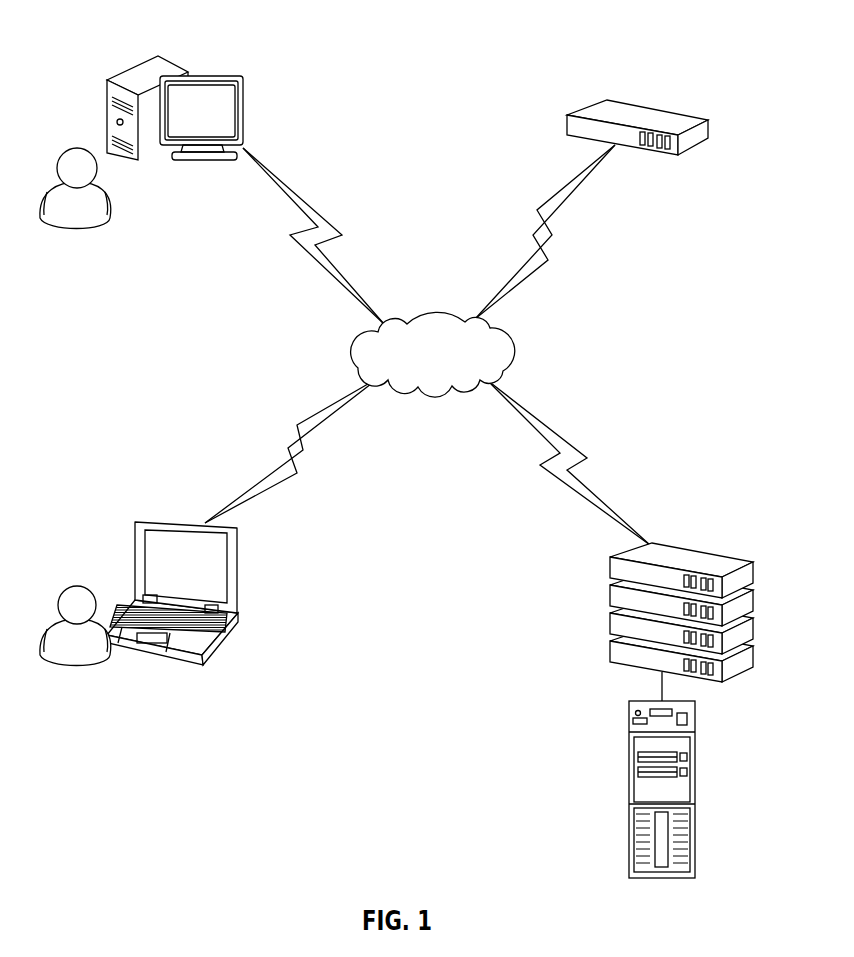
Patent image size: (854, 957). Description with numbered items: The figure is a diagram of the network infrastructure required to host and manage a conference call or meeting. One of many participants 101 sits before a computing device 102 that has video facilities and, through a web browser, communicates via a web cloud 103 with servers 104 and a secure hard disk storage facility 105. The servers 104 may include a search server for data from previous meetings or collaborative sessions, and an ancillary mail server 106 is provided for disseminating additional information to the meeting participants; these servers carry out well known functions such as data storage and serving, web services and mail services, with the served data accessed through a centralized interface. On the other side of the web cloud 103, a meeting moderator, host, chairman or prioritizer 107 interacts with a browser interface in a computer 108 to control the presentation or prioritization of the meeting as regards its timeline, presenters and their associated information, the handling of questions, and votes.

The participant 101 is at (76, 587).
The computing device 102 is at (138, 520).
The web cloud 103 is at (437, 316).
The servers 104 is at (732, 556).
The secure hard disk storage facility 105 is at (629, 790).
The mail server 106 is at (682, 113).
The meeting moderator 107 is at (78, 149).
The computer 108 is at (139, 64).